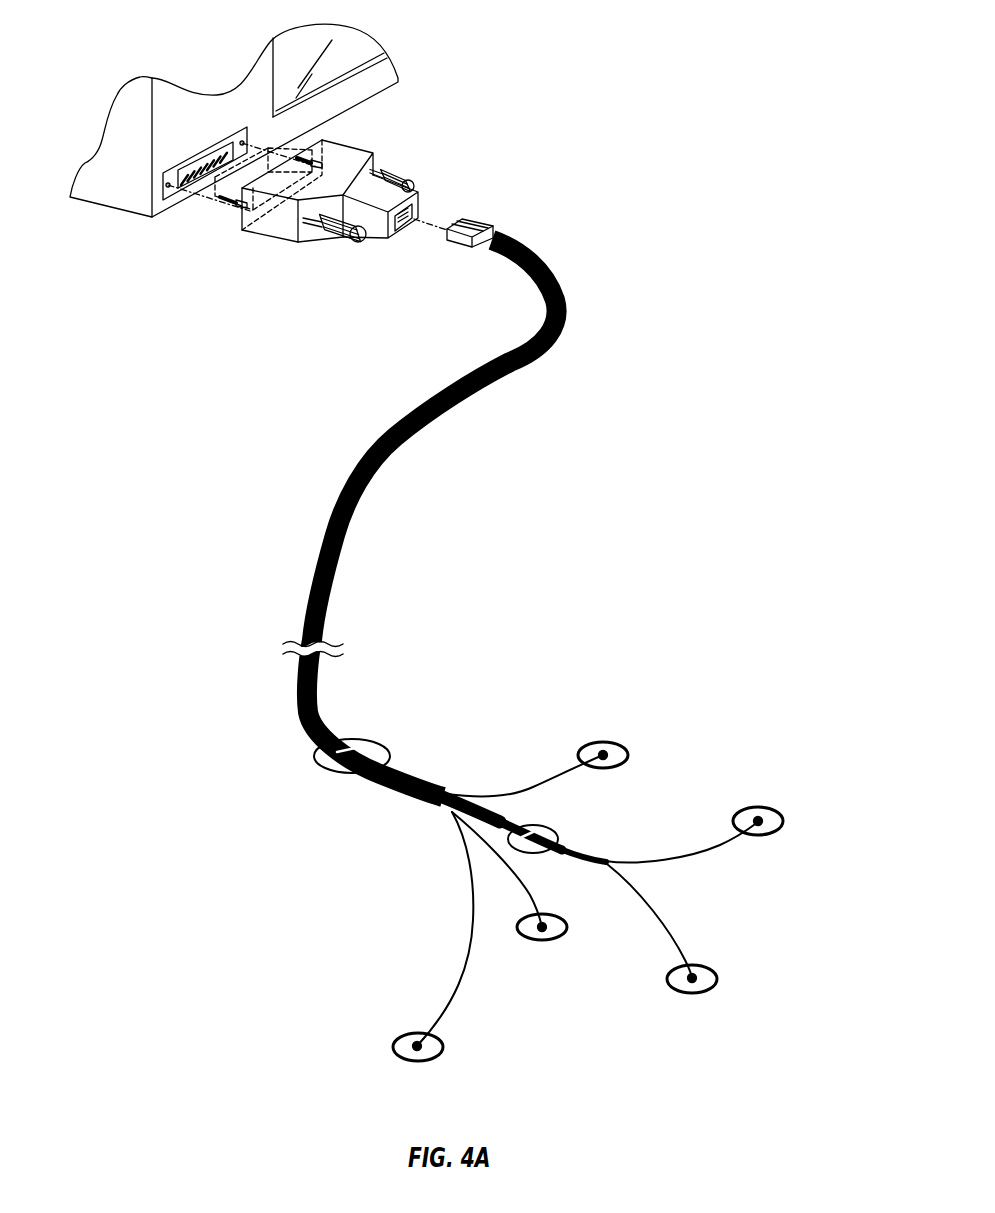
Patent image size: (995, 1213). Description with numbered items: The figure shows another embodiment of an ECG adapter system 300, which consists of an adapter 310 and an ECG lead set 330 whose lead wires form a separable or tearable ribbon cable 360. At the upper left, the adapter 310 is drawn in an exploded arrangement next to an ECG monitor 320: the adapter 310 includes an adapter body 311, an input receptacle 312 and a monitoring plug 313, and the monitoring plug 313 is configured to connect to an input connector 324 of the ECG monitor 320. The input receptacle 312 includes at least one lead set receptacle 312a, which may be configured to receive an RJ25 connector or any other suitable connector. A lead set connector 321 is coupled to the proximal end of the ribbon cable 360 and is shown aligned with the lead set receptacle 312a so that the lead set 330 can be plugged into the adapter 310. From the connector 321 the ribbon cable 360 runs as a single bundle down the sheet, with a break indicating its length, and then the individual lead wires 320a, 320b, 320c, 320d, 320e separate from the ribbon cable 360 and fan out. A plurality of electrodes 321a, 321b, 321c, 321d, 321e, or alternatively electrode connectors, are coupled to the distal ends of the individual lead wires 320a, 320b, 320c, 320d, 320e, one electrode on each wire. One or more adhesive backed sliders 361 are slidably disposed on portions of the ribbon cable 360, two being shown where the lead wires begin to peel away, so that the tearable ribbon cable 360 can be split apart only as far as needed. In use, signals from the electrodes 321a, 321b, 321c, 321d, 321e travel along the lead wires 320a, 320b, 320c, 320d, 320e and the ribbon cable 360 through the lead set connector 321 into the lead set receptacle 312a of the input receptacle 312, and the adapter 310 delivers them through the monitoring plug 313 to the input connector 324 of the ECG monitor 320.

The ECG adapter system 300 is at (660, 404).
The adapter 310 is at (345, 155).
The adapter body 311 is at (268, 218).
The input receptacle 312 is at (379, 190).
The lead set receptacle 312a is at (405, 222).
The monitoring plug 313 is at (220, 187).
The ECG monitor 320 is at (137, 199).
The input connector 324 is at (188, 157).
The lead set connector 321 is at (478, 215).
The ECG lead set 330 is at (318, 523).
The ribbon cable 360 is at (375, 785).
The adhesive backed slider 361 is at (377, 747).
The lead wire 320a is at (545, 785).
The lead wire 320b is at (703, 853).
The lead wire 320c is at (667, 907).
The lead wire 320d is at (533, 893).
The lead wire 320e is at (467, 962).
The electrode 321a is at (618, 747).
The electrode 321b is at (773, 815).
The electrode 321c is at (707, 972).
The electrode 321d is at (557, 918).
The electrode 321e is at (402, 1043).